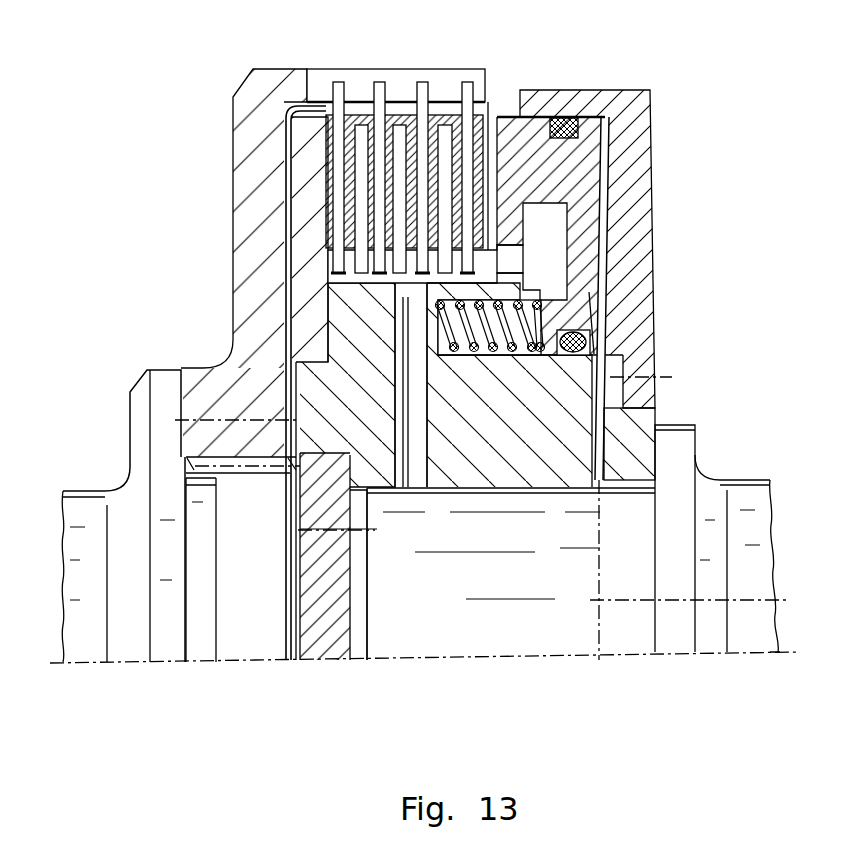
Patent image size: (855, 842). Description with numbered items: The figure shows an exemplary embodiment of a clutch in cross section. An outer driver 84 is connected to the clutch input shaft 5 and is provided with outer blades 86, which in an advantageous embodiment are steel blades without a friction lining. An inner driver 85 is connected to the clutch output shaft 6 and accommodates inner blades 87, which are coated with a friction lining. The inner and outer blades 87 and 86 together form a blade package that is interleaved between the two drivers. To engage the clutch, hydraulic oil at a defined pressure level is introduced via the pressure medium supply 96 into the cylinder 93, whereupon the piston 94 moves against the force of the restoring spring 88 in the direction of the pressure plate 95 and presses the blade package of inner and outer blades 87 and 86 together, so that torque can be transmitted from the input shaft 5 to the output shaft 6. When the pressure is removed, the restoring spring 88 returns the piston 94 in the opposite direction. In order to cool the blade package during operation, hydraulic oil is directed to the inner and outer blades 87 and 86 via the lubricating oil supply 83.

The clutch input shaft 5 is at (80, 500).
The clutch output shaft 6 is at (748, 493).
The lubricating oil supply 83 is at (418, 458).
The outer driver 84 is at (401, 78).
The inner driver 85 is at (300, 375).
The outer blade 86 is at (379, 80).
The inner blade 87 is at (445, 135).
The restoring spring 88 is at (474, 358).
The cylinder 93 is at (632, 187).
The piston 94 is at (582, 258).
The pressure plate 95 is at (302, 195).
The pressure medium supply 96 is at (604, 427).